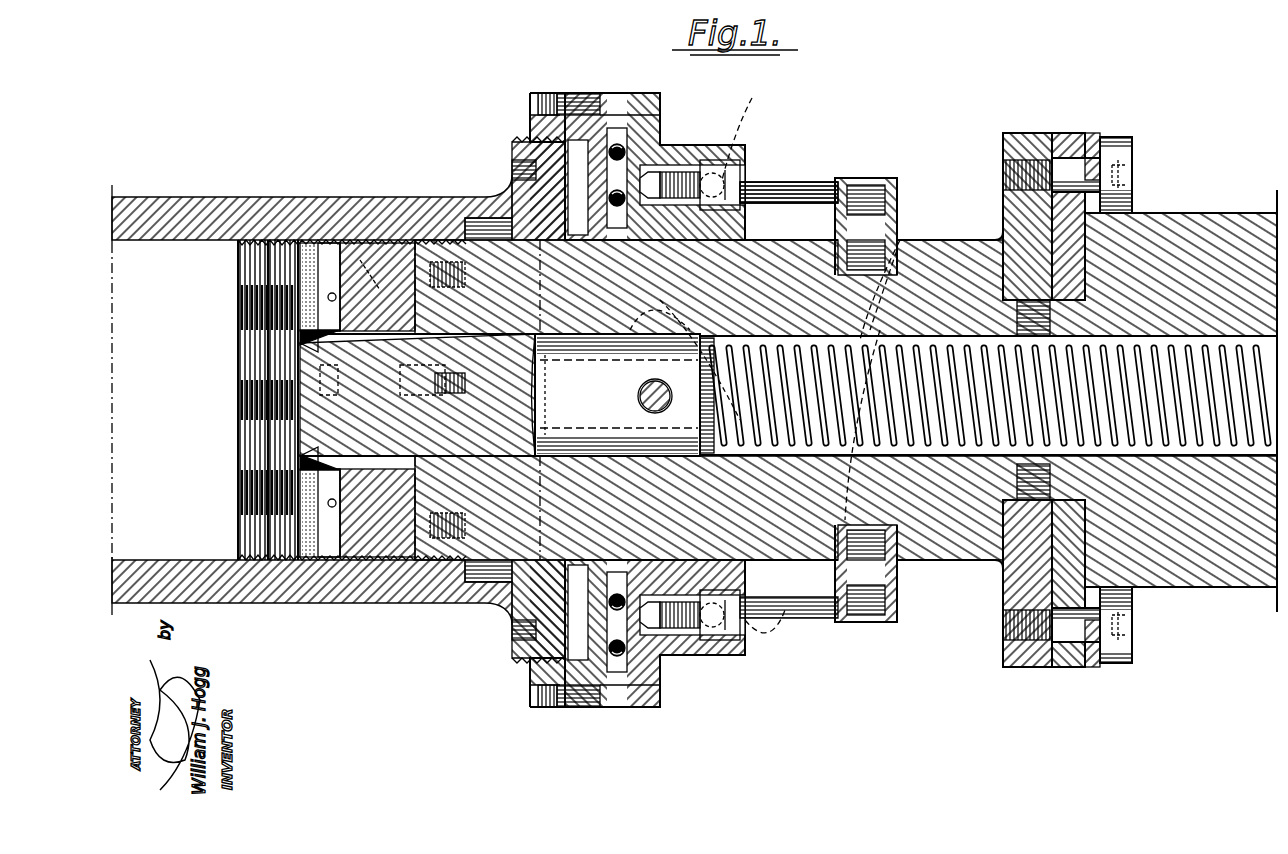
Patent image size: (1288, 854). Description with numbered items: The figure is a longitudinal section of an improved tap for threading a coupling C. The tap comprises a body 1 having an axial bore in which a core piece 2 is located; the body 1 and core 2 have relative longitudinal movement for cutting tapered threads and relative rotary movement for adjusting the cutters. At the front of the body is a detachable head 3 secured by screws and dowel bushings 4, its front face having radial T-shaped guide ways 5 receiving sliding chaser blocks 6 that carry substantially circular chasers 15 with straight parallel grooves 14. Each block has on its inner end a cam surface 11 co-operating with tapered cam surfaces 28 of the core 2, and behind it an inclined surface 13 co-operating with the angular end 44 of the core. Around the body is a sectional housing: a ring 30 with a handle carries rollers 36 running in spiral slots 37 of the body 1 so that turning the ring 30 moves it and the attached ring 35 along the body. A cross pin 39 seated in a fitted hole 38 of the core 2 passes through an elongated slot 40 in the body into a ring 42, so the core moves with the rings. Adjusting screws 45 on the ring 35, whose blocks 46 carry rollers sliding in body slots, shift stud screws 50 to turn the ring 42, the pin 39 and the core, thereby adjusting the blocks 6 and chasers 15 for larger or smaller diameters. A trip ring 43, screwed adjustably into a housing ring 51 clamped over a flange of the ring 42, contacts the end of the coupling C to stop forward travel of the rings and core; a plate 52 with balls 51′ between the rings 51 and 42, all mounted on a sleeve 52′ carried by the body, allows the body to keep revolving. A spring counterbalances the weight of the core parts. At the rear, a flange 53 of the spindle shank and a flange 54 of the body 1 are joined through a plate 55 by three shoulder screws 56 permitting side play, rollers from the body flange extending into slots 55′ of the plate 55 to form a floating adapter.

The body 1 is at (445, 628).
The core piece 2 is at (616, 395).
The head 3 is at (862, 760).
The dowel bushings 4 is at (975, 665).
The guide ways 5 is at (208, 128).
The chaser block 6 is at (306, 250).
The cam surface 11 is at (300, 343).
The inclined surface 13 is at (300, 335).
The grooves 14 is at (268, 420).
The chaser 15 is at (248, 240).
The cam surfaces 28 is at (367, 324).
The ring 30 is at (892, 180).
The ring 35 is at (735, 160).
The rollers 36 is at (897, 260).
The spiral slots 37 is at (897, 275).
The fitted hole 38 is at (640, 400).
The cross pin 39 is at (638, 391).
The elongated slot 40 is at (552, 362).
The ring 42 is at (670, 150).
The trip ring 43 is at (512, 160).
The angular end 44 is at (318, 372).
The adjusting screws 45 is at (753, 386).
The blocks 46 is at (687, 259).
The stud screws 50 is at (720, 185).
The housing ring 51 is at (601, 91).
The balls 51′ is at (640, 128).
The plate 52 is at (605, 120).
The sleeve 52′ is at (789, 190).
The flange 53 is at (1112, 136).
The flange 54 is at (1014, 132).
The plate 55 is at (1067, 132).
The slots 55′ is at (1090, 660).
The shoulder screws 56 is at (1125, 170).
The coupling C is at (122, 205).